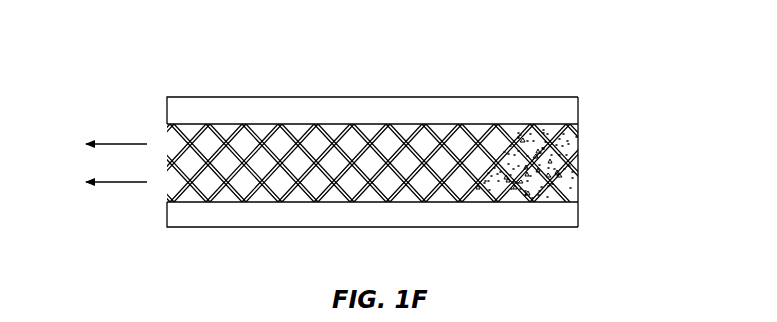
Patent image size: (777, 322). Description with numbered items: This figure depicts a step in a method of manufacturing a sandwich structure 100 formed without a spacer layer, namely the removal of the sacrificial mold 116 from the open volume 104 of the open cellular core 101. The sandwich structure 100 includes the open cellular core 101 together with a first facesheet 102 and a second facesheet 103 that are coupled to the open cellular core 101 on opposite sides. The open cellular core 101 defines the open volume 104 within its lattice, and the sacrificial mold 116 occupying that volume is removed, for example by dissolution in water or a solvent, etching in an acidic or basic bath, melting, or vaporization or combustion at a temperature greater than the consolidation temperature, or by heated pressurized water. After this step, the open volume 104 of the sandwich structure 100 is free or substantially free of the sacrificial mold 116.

The sandwich structure 100 is at (538, 83).
The open cellular core 101 is at (292, 164).
The first facesheet 102 is at (372, 110).
The second facesheet 103 is at (373, 215).
The open volume 104 is at (427, 162).
The sacrificial mold 116 is at (557, 175).